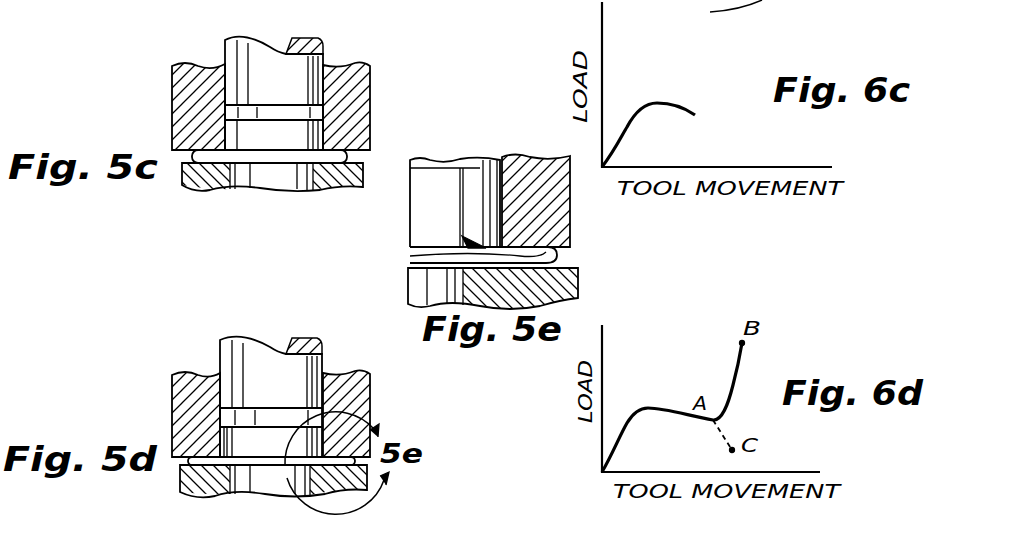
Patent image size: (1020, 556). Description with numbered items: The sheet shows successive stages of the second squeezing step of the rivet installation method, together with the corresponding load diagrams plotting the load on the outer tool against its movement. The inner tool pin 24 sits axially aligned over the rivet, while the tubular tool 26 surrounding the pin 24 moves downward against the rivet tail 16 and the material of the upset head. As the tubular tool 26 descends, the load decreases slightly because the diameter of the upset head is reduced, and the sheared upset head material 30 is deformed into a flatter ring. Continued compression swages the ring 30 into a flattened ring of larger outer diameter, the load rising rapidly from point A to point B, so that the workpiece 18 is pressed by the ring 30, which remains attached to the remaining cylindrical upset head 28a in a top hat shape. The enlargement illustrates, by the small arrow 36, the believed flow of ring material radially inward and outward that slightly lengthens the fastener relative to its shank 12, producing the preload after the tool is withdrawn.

In FIG. 5E, the shank 12 is at (423, 292).
In FIG. 5E, the tail 16 is at (428, 206).
In FIG. 5C, the workpiece 18 is at (212, 178).
In FIG. 5D, the workpiece 18 is at (213, 478).
In FIG. 5E, the workpiece 18 is at (578, 288).
In FIG. 5C, the pin 24 is at (240, 58).
In FIG. 5D, the pin 24 is at (234, 350).
In FIG. 5C, the tubular tool 26 is at (360, 85).
In FIG. 5D, the tubular tool 26 is at (357, 384).
In FIG. 5E, the tubular tool 26 is at (530, 170).
In FIG. 5D, the upset head 28a is at (227, 442).
In FIG. 5E, the upset head 28a is at (457, 178).
In FIG. 5C, the ring 30 is at (196, 156).
In FIG. 5D, the ring 30 is at (190, 466).
In FIG. 5E, the ring 30 is at (560, 258).
In FIG. 5E, the arrow 36 is at (482, 253).